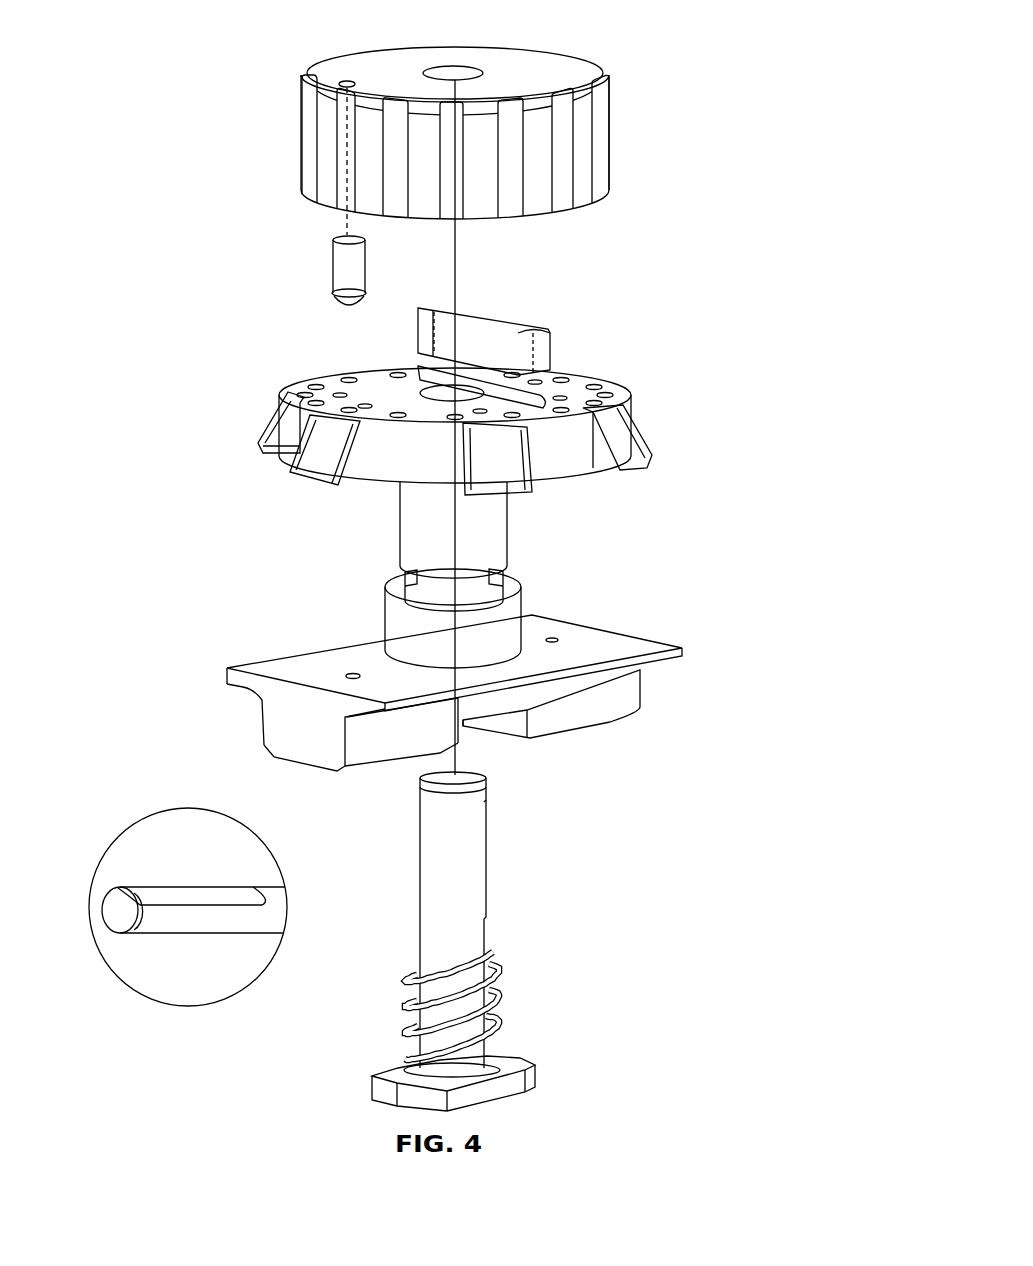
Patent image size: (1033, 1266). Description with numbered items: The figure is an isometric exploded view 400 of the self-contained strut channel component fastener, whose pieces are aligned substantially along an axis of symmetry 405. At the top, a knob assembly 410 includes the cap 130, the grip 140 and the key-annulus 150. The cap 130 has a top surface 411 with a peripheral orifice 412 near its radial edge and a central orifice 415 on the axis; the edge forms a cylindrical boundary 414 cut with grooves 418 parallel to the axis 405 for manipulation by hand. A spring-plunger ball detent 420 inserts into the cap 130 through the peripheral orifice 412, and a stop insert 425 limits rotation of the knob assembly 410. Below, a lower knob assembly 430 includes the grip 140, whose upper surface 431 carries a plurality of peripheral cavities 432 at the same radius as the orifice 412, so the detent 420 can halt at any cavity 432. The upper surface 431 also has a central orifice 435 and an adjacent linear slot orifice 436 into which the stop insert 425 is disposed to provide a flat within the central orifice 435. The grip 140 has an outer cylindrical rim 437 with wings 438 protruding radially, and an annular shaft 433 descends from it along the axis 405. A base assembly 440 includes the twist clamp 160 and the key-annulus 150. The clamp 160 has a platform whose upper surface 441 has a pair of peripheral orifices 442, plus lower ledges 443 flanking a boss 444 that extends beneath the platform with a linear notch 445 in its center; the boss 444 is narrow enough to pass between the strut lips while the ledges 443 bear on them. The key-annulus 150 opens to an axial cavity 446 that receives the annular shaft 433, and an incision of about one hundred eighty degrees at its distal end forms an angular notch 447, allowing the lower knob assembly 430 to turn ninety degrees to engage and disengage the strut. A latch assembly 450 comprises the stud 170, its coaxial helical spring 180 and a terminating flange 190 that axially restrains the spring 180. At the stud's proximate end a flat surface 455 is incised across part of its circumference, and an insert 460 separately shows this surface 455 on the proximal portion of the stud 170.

The exploded view 400 is at (233, 101).
The axis of symmetry 405 is at (468, 278).
The knob assembly 410 is at (788, 49).
The cap 130 is at (715, 49).
The top surface 411 is at (581, 68).
The peripheral orifice 412 is at (350, 78).
The cylindrical boundary 414 is at (295, 152).
The central aperture 415 is at (492, 62).
The grooves 418 is at (535, 196).
The spring-plunger ball detent 420 is at (340, 273).
The stop insert 425 is at (505, 333).
The lower knob assembly 430 is at (159, 378).
The grip 140 is at (715, 349).
The upper surface 431 is at (356, 388).
The peripheral cavities 432 is at (566, 386).
The central orifice 435 is at (410, 390).
The linear slot orifice 436 is at (425, 372).
The outer cylindrical rim 437 is at (555, 470).
The wings 438 is at (637, 430).
The annular shaft 433 is at (408, 530).
The base assembly 440 is at (764, 565).
The upper surface 441 is at (588, 647).
The peripheral orifices 442 is at (343, 671).
The lower ledges 443 is at (240, 690).
The boss 444 is at (295, 762).
The linear notch 445 is at (492, 738).
The axial cavity 446 is at (418, 576).
The angular notch 447 is at (515, 580).
The key-annulus 150 is at (393, 627).
The twist clamp 160 is at (585, 705).
The latch assembly 450 is at (764, 784).
The stud 170 is at (480, 928).
The flat surface 455 is at (158, 886).
The insert 460 is at (325, 896).
The helical spring 180 is at (497, 1018).
The flange 190 is at (383, 1071).